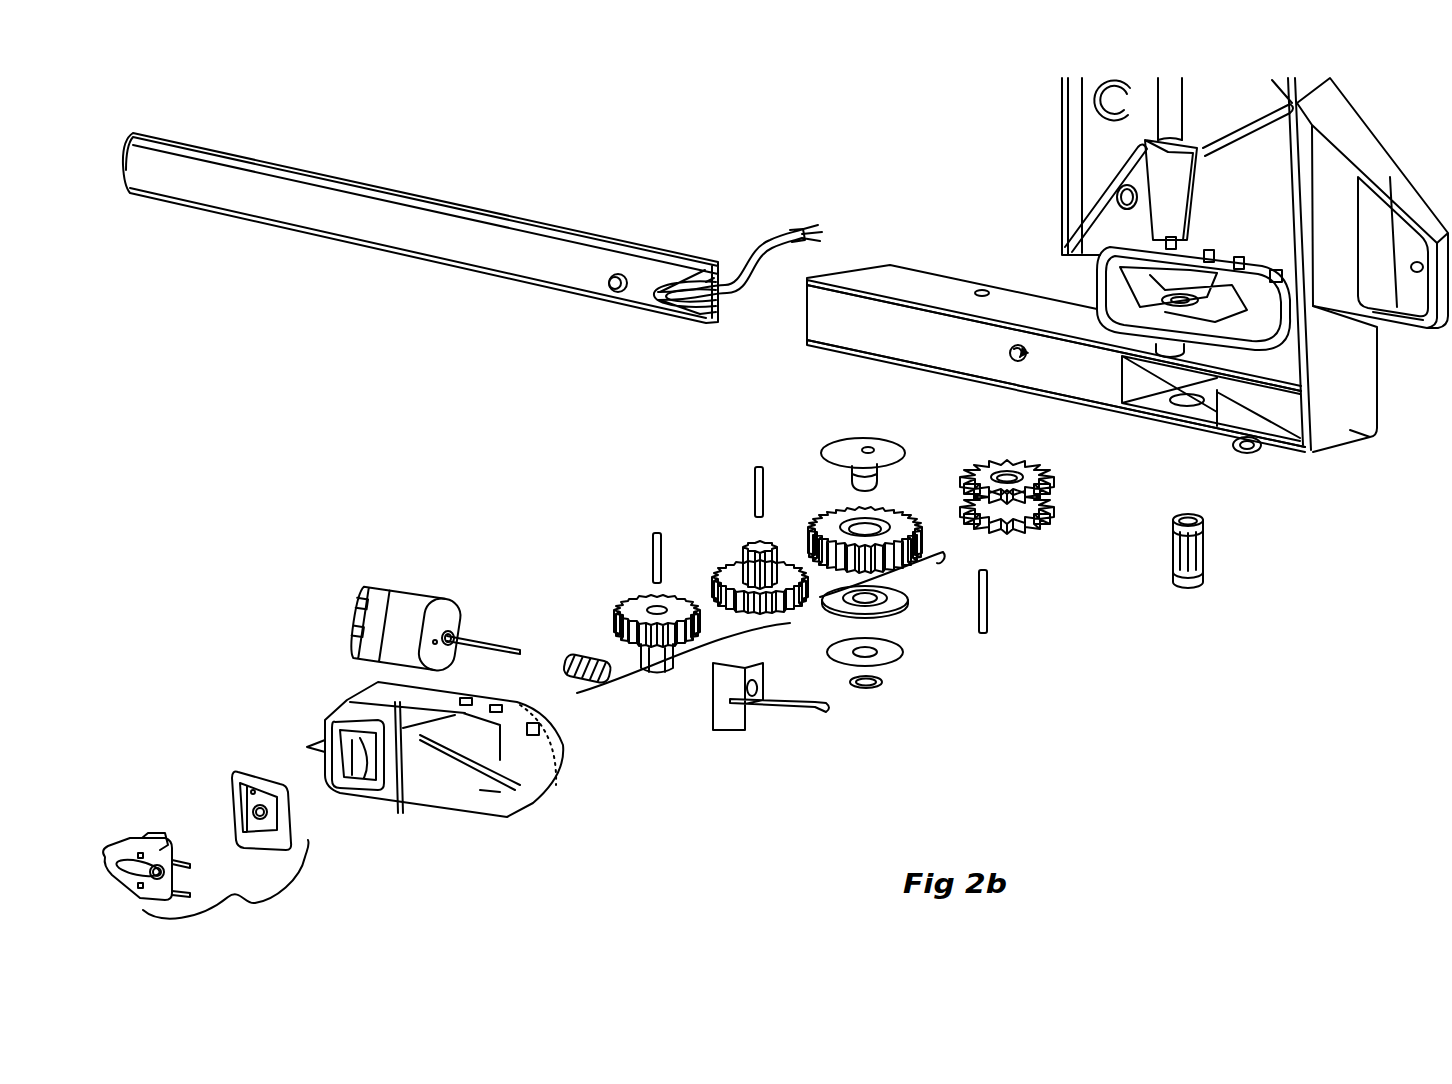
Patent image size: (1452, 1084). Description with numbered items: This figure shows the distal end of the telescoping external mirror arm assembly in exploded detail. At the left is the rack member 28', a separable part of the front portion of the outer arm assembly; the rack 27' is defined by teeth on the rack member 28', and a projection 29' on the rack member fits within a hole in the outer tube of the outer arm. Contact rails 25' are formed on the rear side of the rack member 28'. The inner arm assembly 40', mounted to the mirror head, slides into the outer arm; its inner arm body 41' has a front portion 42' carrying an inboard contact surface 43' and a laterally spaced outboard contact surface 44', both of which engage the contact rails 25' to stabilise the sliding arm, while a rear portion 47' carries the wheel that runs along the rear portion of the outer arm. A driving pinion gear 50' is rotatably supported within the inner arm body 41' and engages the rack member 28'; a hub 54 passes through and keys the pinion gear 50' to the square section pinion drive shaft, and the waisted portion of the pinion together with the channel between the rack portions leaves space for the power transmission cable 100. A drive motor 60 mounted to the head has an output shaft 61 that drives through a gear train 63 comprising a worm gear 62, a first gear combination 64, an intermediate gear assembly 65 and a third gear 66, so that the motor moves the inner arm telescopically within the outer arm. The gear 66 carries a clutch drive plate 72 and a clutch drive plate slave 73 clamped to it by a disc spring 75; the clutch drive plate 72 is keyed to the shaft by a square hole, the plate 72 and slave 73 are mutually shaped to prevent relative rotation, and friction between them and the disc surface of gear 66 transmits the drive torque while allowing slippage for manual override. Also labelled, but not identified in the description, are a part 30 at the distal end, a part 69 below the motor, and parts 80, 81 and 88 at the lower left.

The rack member 28' is at (420, 228).
The projection 29' is at (560, 321).
The contact rails 25' is at (713, 283).
The rack 27' is at (726, 204).
The power transmission cable 100 is at (795, 230).
The inner arm assembly 40' is at (1026, 322).
The inner arm body 41' is at (1056, 329).
The front portion 42' is at (1011, 392).
The inboard contact surface 43' is at (1009, 338).
The outboard contact surface 44' is at (1228, 437).
The rear portion 47' is at (1151, 264).
The bracket 30 is at (1335, 400).
The gear train 63 is at (761, 622).
The clutch drive plate 72 is at (845, 448).
The third gear 66 is at (898, 520).
The intermediate gear assembly 65 is at (733, 563).
The first gear combination 64 is at (637, 605).
The worm gear 62 is at (585, 655).
The clutch drive plate slave 73 is at (913, 610).
The disc spring 75 is at (897, 653).
The driving pinion gear 50' is at (1030, 524).
The hub 54 is at (1203, 578).
The drive motor 60 is at (417, 603).
The output shaft 61 is at (496, 632).
The motor housing 69 is at (557, 757).
The plug 81 is at (143, 837).
The plate 88 is at (237, 773).
The power connector 80 is at (226, 885).